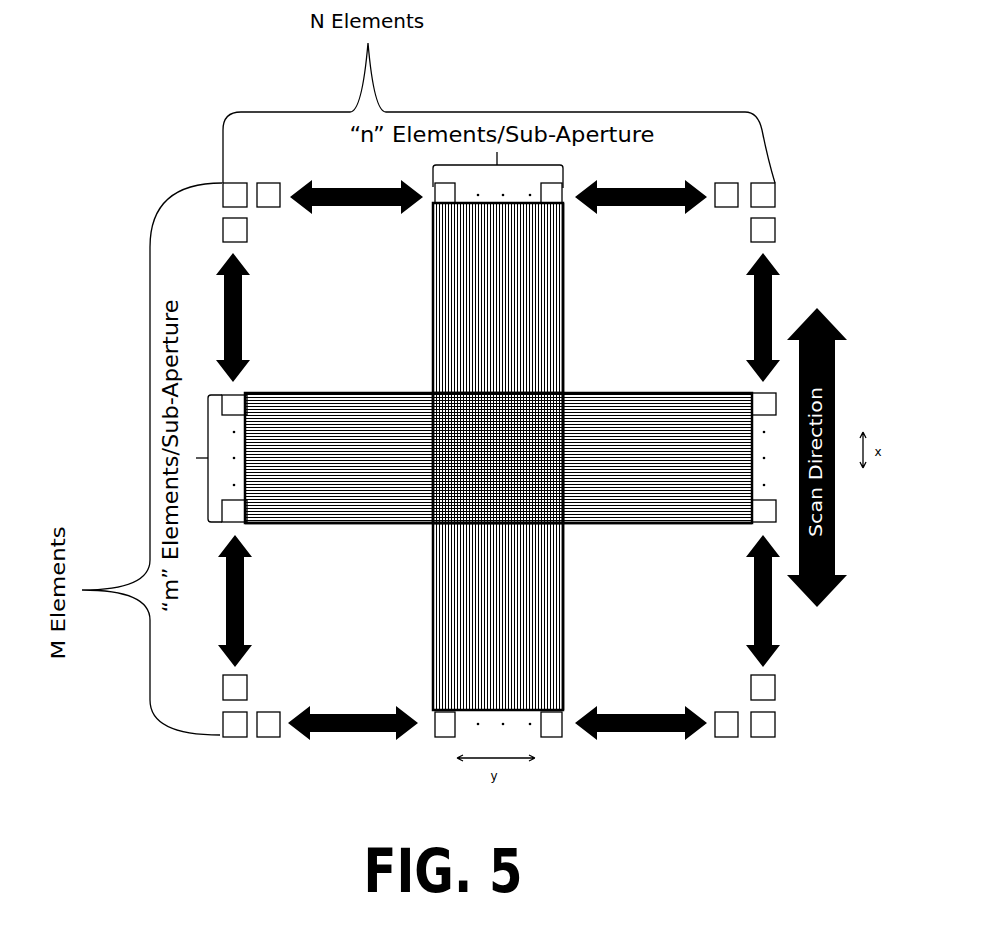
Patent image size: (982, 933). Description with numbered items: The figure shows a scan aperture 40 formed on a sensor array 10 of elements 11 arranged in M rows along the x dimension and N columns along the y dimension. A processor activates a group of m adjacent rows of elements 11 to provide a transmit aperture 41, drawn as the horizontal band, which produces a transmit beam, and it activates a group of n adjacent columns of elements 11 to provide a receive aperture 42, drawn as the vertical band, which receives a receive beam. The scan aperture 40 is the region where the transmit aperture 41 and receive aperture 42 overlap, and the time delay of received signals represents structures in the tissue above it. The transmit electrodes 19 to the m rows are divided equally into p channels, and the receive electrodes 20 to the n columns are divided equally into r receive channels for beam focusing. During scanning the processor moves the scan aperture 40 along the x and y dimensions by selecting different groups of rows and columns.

The sensor array 10 is at (800, 182).
The elements 11 is at (222, 228).
The transmit electrodes 19 is at (291, 393).
The receive electrodes 20 is at (556, 291).
The scan aperture 40 is at (565, 391).
The transmit aperture 41 is at (304, 524).
The receive aperture 42 is at (564, 258).